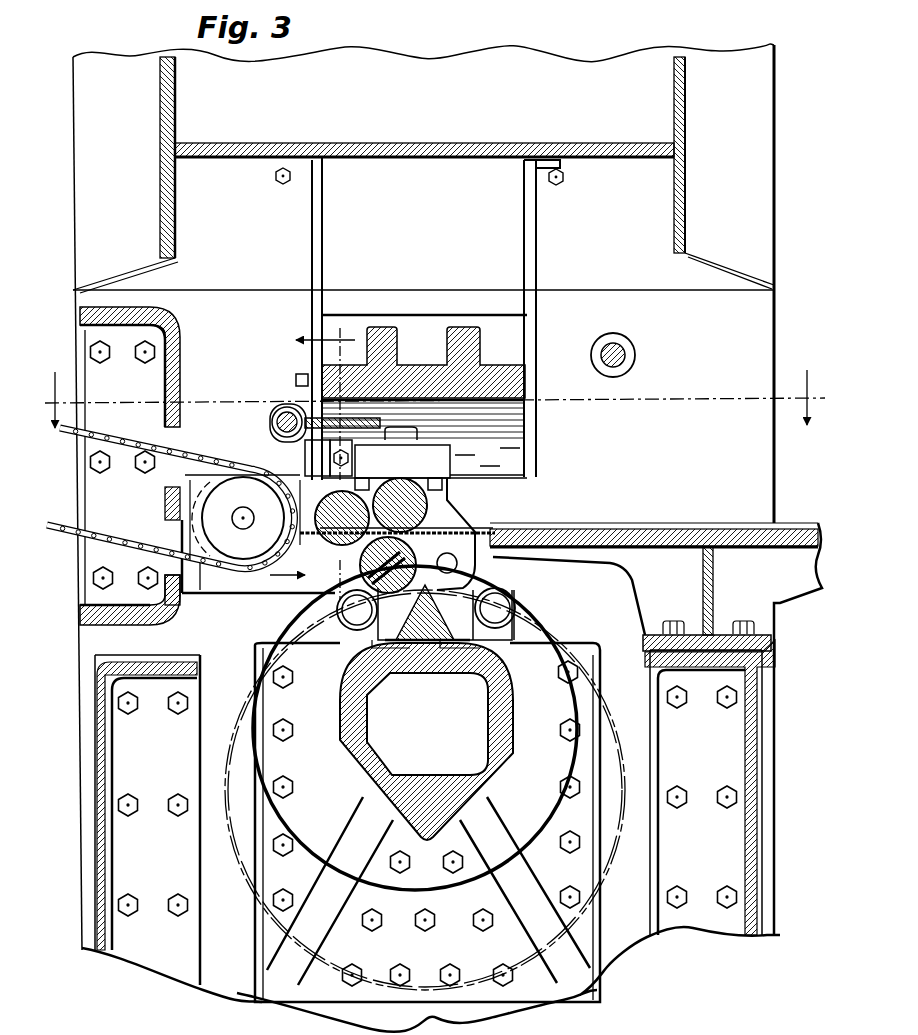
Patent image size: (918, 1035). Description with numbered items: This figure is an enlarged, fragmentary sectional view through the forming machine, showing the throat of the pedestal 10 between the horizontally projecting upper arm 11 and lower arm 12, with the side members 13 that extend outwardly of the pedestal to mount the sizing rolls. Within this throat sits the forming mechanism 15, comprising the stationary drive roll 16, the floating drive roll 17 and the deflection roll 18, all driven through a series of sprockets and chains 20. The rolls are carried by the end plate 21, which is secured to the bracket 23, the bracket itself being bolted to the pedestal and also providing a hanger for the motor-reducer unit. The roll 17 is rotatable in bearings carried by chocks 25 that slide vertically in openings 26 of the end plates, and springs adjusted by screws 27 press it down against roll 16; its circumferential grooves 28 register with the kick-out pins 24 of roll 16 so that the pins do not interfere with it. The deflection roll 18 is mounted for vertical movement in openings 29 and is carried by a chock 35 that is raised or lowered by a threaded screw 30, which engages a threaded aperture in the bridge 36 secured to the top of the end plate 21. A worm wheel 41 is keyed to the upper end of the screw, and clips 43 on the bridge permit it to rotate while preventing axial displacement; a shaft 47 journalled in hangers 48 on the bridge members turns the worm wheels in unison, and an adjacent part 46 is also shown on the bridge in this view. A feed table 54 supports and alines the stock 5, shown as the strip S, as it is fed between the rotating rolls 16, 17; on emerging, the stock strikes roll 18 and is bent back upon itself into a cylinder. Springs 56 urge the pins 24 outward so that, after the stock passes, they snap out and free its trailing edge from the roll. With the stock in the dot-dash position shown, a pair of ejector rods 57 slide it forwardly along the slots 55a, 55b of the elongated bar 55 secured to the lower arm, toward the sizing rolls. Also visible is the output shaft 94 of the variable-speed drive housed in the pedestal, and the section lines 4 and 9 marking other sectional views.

The pedestal 10 is at (752, 305).
The upper arm 11 is at (752, 163).
The lower arm 12 is at (516, 755).
The side members 13 is at (112, 768).
The forming mechanism 15 is at (466, 505).
The stationary drive roll 16 is at (462, 575).
The floating drive roll 17 is at (463, 507).
The deflection roll 18 is at (325, 536).
The sprockets and chains 20 is at (116, 525).
The end plate 21 is at (258, 585).
The bracket 23 is at (182, 361).
The kick-out pins 24 is at (145, 357).
The chocks 25 is at (447, 488).
The openings 26 is at (425, 490).
The screws 27 is at (400, 430).
The circumferential grooves 28 is at (398, 490).
The openings 29 is at (362, 480).
The threaded screw 30 is at (268, 428).
The chock 35 is at (310, 476).
The bridge 36 is at (215, 455).
The worm wheel 41 is at (303, 395).
The clips 43 is at (330, 455).
The pivot pin 46 is at (283, 407).
The shaft 47 is at (300, 422).
The hangers 48 is at (276, 497).
The feed table 54 is at (620, 523).
The elongated bar 55 is at (418, 640).
The slot 55a is at (392, 641).
The slot 55b is at (440, 648).
The springs 56 is at (337, 600).
The ejector rods 57 is at (505, 600).
The output shaft 94 is at (600, 345).
The strip 5 is at (485, 528).
The section line 4- 4 is at (433, 384).
The section line 9- 9 is at (311, 464).